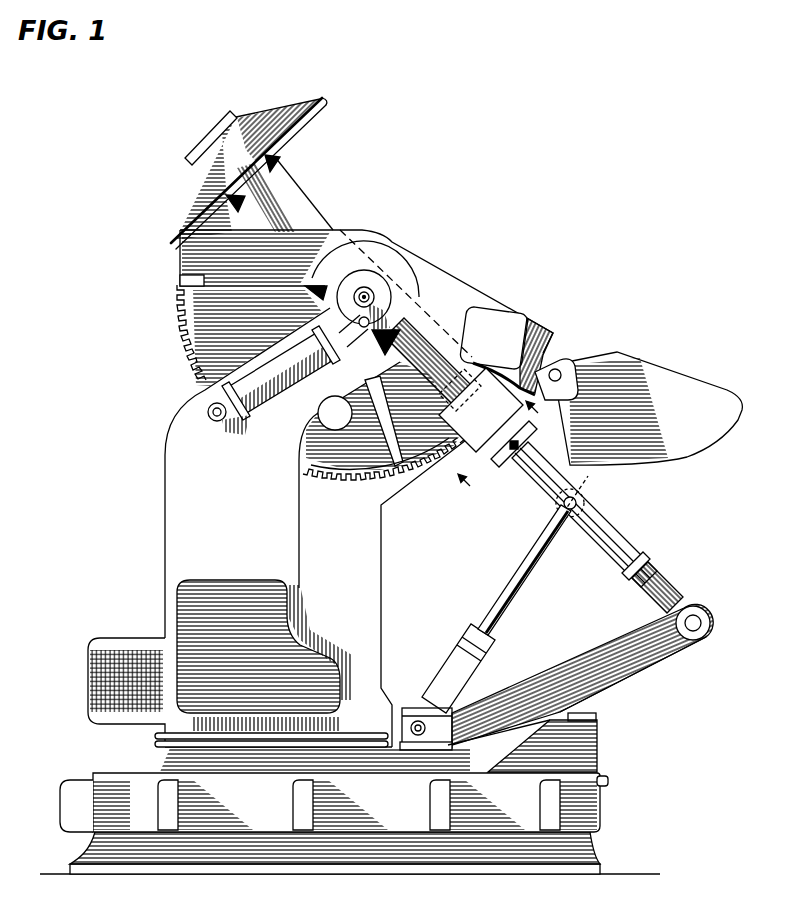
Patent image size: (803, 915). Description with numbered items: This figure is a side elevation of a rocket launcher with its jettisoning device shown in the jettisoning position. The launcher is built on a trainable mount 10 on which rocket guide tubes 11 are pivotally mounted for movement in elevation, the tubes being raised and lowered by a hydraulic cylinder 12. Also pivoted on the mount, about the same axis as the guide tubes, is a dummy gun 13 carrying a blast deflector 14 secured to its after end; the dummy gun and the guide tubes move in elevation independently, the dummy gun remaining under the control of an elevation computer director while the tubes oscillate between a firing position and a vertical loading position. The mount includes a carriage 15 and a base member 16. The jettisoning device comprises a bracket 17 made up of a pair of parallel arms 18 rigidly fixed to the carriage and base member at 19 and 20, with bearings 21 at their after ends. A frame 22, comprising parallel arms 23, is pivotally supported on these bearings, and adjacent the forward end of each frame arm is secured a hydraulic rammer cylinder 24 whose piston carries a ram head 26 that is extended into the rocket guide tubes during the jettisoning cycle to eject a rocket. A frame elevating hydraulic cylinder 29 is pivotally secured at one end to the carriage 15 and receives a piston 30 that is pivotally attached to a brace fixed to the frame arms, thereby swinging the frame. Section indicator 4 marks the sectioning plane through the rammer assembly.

The section line 4- 4 is at (442, 366).
The trainable mount 10 is at (592, 811).
The rocket guide tubes 11 is at (308, 194).
The hydraulic cylinder 12 is at (280, 367).
The dummy gun 13 is at (178, 262).
The blast deflector 14 is at (668, 366).
The carriage 15 is at (183, 758).
The base member 16 is at (598, 740).
The bracket 17 is at (666, 671).
The parallel arms 18 is at (566, 662).
The fixing point 19 is at (445, 748).
The fixing point 20 is at (593, 716).
The bearings 21 is at (708, 616).
The frame 22 is at (671, 576).
The parallel arms 23 is at (643, 598).
The hydraulic rammer cylinder 24 is at (609, 527).
The ram head 26 is at (463, 434).
The frame elevating hydraulic cylinder 29 is at (458, 657).
The piston 30 is at (523, 568).